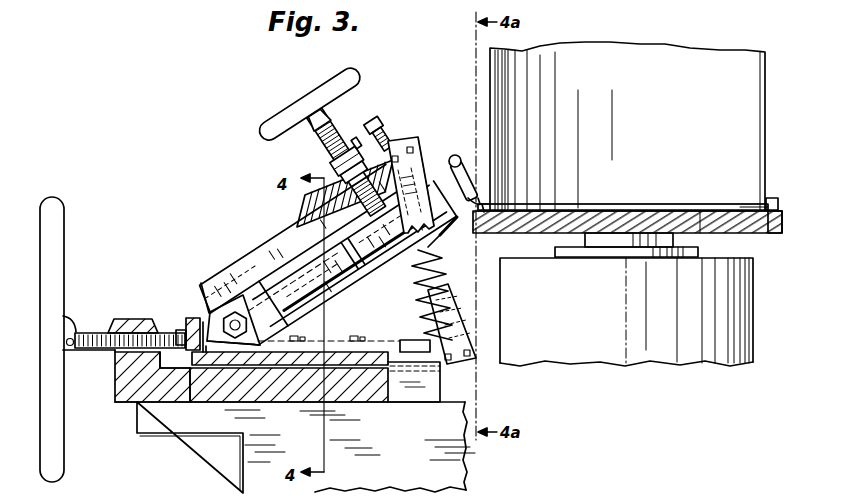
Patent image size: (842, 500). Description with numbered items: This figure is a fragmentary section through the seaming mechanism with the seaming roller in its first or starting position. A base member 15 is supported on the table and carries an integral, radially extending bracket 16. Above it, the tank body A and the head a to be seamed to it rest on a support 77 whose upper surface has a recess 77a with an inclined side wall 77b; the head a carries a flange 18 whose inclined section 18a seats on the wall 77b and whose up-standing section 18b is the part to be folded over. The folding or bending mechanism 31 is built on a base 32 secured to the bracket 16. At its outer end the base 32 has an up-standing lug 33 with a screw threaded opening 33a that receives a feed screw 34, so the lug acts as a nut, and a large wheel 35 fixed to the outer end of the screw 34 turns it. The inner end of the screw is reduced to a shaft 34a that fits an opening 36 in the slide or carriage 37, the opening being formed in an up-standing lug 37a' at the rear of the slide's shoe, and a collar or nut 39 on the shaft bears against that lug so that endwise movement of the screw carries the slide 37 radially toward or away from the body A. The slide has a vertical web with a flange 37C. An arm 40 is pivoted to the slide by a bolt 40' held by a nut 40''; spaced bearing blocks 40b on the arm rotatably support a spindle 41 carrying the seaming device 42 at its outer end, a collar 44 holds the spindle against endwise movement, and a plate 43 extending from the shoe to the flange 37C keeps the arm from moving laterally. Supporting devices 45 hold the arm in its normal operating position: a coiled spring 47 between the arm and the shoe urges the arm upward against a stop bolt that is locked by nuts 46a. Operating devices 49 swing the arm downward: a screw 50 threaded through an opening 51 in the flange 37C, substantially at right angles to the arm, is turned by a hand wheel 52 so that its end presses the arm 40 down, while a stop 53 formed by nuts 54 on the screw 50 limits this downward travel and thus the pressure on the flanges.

The base member 15 is at (626, 312).
The bracket 16 is at (162, 433).
The flange 18 is at (500, 206).
The inclined section 18a is at (760, 205).
The up-standing section 18b is at (773, 197).
The folding or bending mechanism 31 is at (428, 175).
The base 32 is at (440, 385).
The up-standing lug 33 is at (140, 314).
The screw threaded opening 33a is at (114, 364).
The feed screw 34 is at (92, 331).
The shaft 34a is at (184, 328).
The wheel 35 is at (61, 236).
The opening 36 is at (175, 361).
The slide or carriage 37 is at (311, 339).
The flange 37C is at (304, 213).
The up-standing lug 37a' is at (194, 292).
The collar or nut 39 is at (206, 350).
The arm 40 is at (326, 253).
The bolt 40' is at (230, 282).
The nut 40'' is at (243, 382).
The bearing blocks or lugs 40b is at (261, 290).
The shaft or spindle 41 is at (377, 263).
The seaming device 42 is at (466, 170).
The plate 43 is at (418, 163).
The collar 44 is at (372, 229).
The supporting devices 45 is at (412, 195).
The nuts 46a is at (386, 127).
The coiled spring 47 is at (447, 279).
The operating devices 49 is at (309, 126).
The screw 50 is at (326, 155).
The opening 51 is at (352, 173).
The hand wheel 52 is at (296, 114).
The stop 53 is at (335, 162).
The nuts 54 is at (358, 147).
The support 77 is at (520, 233).
The recess 77a is at (716, 233).
The inclined side wall 77b is at (768, 234).
The tank body A is at (758, 116).
The head a is at (676, 214).